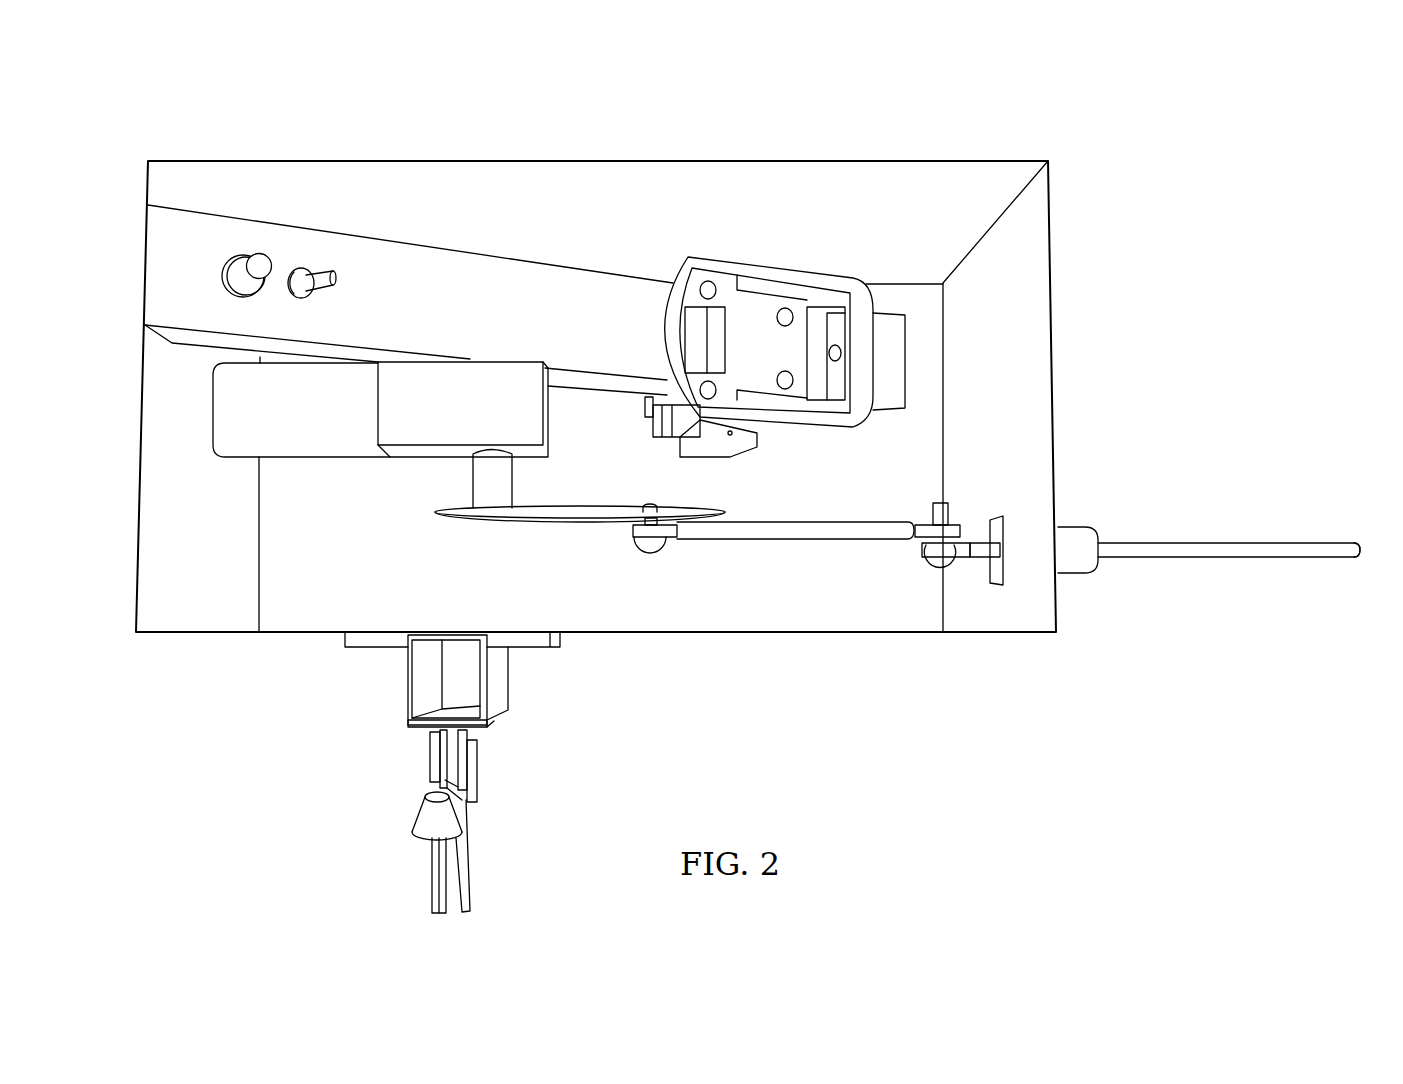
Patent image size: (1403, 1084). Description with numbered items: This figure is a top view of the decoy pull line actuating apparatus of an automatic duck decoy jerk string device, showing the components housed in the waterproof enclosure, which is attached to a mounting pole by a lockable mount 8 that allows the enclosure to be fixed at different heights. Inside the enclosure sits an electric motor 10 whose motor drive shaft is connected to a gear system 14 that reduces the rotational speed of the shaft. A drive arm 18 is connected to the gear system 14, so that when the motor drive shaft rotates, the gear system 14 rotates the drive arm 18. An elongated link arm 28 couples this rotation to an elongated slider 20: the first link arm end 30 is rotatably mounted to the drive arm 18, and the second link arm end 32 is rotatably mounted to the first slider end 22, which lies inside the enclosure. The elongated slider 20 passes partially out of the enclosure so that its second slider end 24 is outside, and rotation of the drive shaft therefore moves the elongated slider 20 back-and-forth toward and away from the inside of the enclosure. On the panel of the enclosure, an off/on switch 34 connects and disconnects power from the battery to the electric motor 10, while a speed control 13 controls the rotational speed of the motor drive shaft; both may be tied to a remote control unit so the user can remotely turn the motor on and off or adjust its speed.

The lockable mount 8 is at (428, 813).
The electric motor 10 is at (247, 437).
The speed control 13 is at (259, 256).
The gear system 14 is at (500, 388).
The drive arm 18 is at (572, 519).
The elongated slider 20 is at (1203, 548).
The first slider end 22 is at (938, 562).
The second slider end 24 is at (1362, 557).
The elongated link arm 28 is at (760, 540).
The first link arm end 30 is at (650, 548).
The second link arm end 32 is at (893, 520).
The off/on switch 34 is at (337, 274).